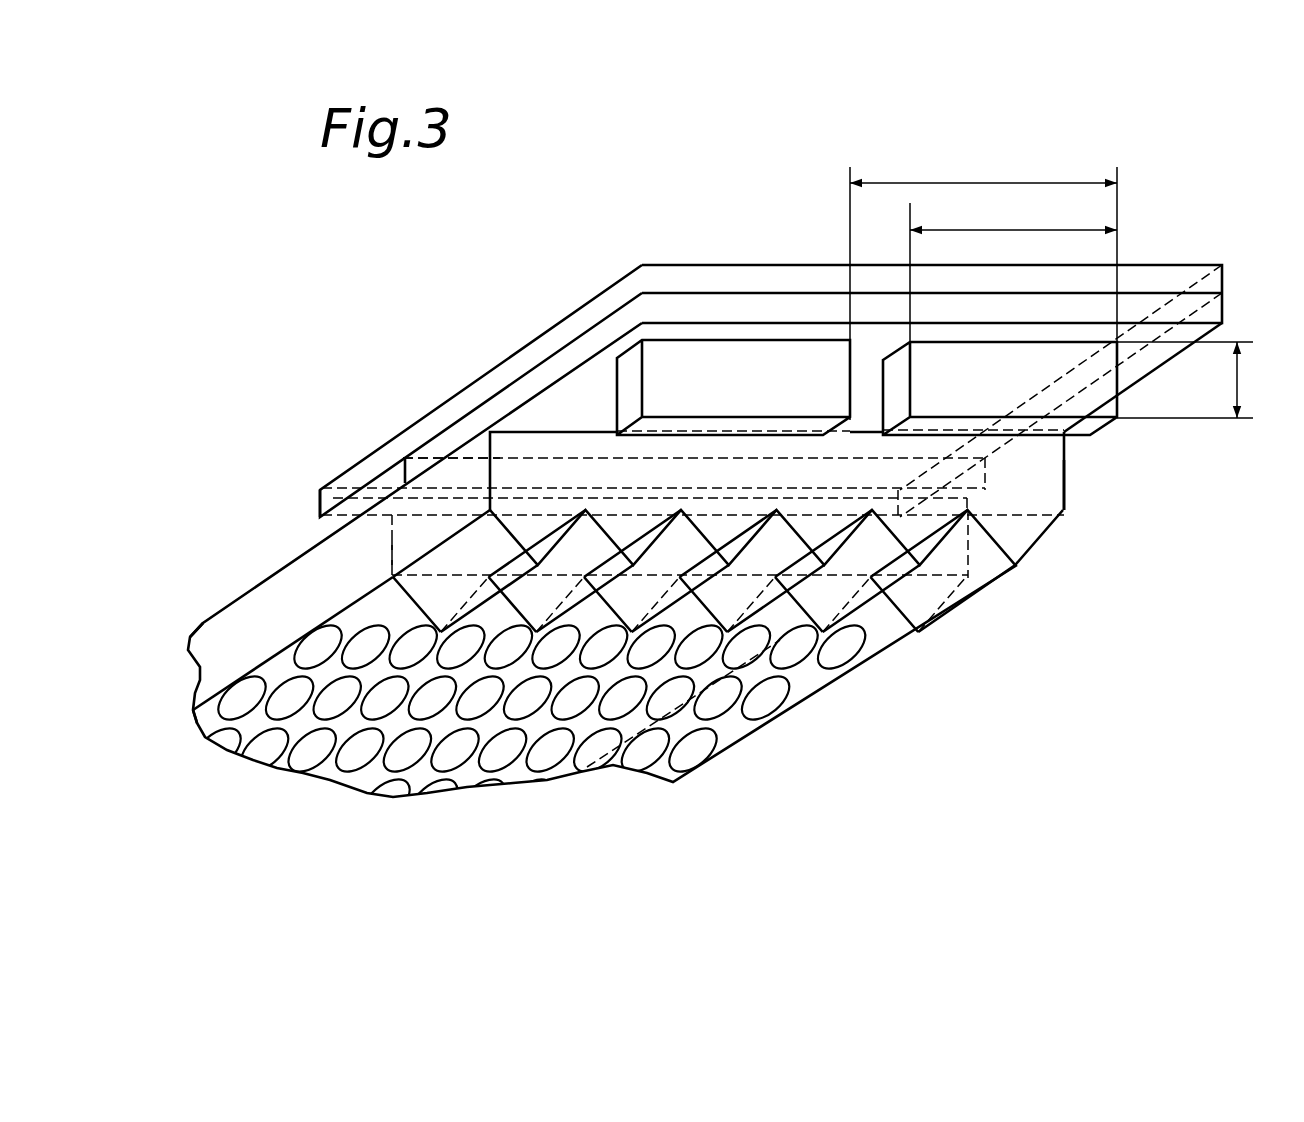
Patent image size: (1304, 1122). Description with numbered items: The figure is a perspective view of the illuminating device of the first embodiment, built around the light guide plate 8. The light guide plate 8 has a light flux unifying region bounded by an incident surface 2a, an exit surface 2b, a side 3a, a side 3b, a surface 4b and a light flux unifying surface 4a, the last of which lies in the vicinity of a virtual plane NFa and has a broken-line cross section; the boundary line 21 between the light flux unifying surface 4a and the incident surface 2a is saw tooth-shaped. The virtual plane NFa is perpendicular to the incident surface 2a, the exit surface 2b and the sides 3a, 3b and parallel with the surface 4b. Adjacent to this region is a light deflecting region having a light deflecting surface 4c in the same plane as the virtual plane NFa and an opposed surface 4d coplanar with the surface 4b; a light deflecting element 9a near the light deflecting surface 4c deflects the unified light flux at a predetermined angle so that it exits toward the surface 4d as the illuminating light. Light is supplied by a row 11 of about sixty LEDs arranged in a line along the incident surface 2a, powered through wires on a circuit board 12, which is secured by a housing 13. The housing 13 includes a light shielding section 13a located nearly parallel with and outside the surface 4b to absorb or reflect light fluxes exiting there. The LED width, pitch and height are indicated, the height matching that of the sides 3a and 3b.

The light guide plate 8 is at (903, 702).
The incident surface 2a is at (547, 440).
The exit surface 2b is at (413, 537).
The side 3a is at (217, 656).
The side 3b is at (1033, 462).
The light flux unifying surface 4a is at (967, 592).
The surface 4b is at (447, 442).
The light deflecting surface 4c is at (208, 722).
The surface 4d is at (237, 620).
The light deflecting element 9a is at (263, 750).
The row of the LEDs 11 is at (760, 372).
The circuit board 12 is at (438, 448).
The housing 13 is at (497, 382).
The light shielding section 13a is at (320, 503).
The boundary line 21 is at (505, 540).
The virtual plane NFa is at (410, 563).